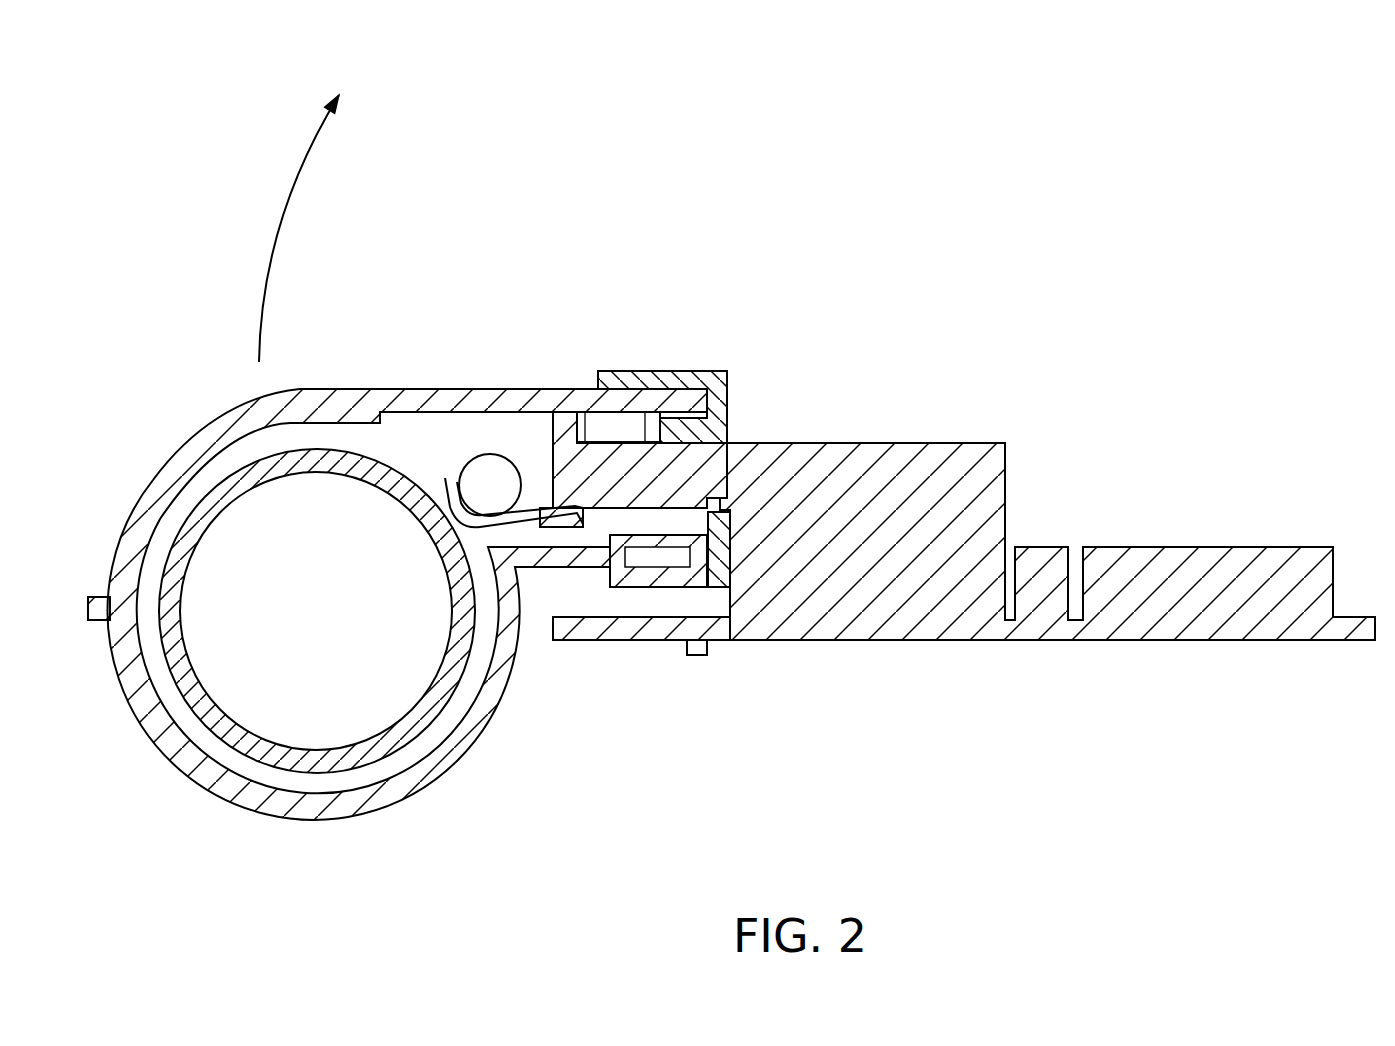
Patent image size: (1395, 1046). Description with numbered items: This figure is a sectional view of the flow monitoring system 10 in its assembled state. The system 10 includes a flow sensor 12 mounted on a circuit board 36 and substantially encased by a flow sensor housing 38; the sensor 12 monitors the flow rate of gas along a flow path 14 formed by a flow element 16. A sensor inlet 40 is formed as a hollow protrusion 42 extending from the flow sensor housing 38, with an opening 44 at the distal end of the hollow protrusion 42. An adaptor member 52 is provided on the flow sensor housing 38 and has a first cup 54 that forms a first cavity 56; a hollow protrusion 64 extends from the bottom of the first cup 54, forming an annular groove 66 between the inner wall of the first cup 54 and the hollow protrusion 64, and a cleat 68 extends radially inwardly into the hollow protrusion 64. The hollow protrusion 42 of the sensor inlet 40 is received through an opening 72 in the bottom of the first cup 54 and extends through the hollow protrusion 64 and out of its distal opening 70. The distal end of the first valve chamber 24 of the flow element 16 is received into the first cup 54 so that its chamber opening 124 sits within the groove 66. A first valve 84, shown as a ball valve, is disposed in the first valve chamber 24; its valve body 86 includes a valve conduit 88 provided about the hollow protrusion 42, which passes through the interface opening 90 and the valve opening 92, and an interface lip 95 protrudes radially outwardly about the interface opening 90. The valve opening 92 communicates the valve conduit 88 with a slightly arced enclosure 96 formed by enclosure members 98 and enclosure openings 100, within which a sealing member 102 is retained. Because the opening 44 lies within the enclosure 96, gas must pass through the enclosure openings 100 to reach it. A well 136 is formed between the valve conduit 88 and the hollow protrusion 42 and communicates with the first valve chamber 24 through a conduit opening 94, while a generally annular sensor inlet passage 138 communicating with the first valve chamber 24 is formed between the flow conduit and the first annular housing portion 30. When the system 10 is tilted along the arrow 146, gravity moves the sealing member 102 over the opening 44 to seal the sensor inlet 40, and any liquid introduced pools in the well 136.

The flow monitoring system 10 is at (708, 195).
The flow sensor 12 is at (890, 600).
The flow path 14 is at (302, 613).
The flow element 16 is at (172, 443).
The first valve chamber 24 is at (558, 440).
The first annular housing portion 30 is at (112, 660).
The circuit board 36 is at (1365, 642).
The flow sensor housing 38 is at (978, 443).
The sensor inlet 40 is at (585, 405).
The hollow protrusion 42 is at (621, 490).
The opening 44 is at (548, 500).
The adaptor member 52 is at (722, 360).
The first cup 54 is at (730, 385).
The first cavity 56 is at (608, 535).
The hollow protrusion 64 is at (727, 418).
The annular groove 66 is at (712, 540).
The cleat 68 is at (720, 435).
The opening 70 is at (683, 415).
The opening 72 is at (713, 473).
The first valve 84 is at (620, 415).
The valve body 86 is at (645, 380).
The valve conduit 88 is at (665, 535).
The interface opening 90 is at (717, 385).
The valve opening 92 is at (553, 512).
The conduit opening 94 is at (595, 535).
The interface lip 95 is at (727, 580).
The enclosure 96 is at (448, 558).
The enclosure members 98 is at (442, 546).
The enclosure openings 100 is at (493, 445).
The sealing member 102 is at (458, 487).
The chamber opening 124 is at (730, 373).
The well 136 is at (645, 535).
The sensor inlet passage 138 is at (325, 792).
The arrow 146 is at (280, 225).